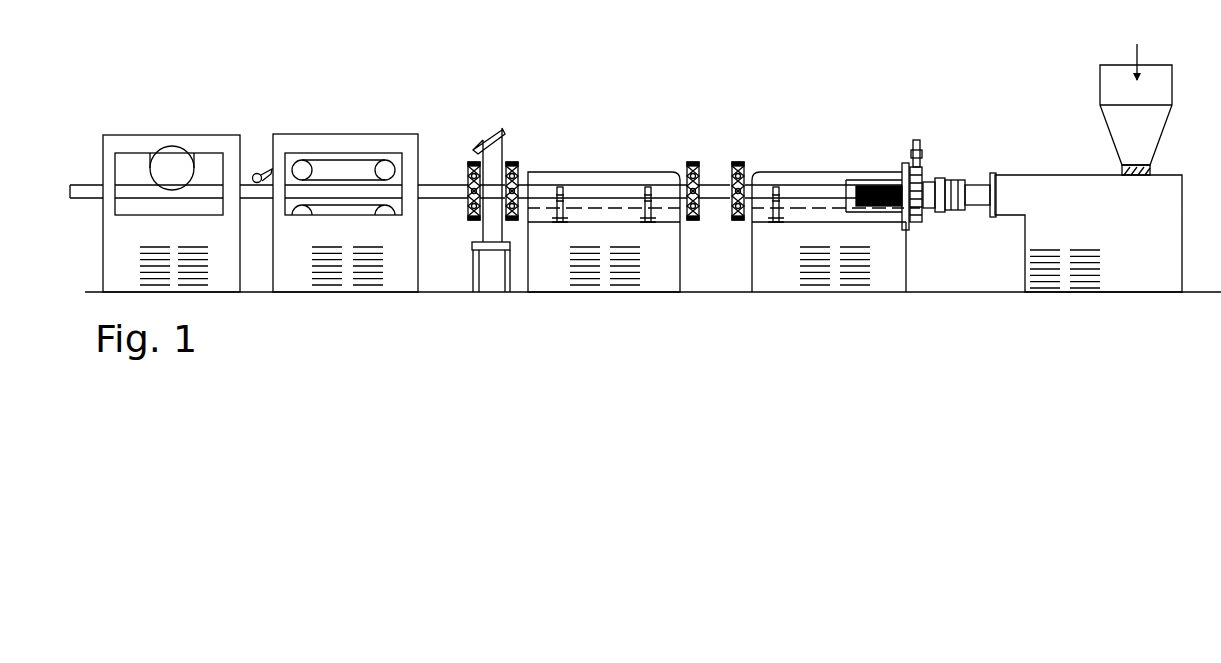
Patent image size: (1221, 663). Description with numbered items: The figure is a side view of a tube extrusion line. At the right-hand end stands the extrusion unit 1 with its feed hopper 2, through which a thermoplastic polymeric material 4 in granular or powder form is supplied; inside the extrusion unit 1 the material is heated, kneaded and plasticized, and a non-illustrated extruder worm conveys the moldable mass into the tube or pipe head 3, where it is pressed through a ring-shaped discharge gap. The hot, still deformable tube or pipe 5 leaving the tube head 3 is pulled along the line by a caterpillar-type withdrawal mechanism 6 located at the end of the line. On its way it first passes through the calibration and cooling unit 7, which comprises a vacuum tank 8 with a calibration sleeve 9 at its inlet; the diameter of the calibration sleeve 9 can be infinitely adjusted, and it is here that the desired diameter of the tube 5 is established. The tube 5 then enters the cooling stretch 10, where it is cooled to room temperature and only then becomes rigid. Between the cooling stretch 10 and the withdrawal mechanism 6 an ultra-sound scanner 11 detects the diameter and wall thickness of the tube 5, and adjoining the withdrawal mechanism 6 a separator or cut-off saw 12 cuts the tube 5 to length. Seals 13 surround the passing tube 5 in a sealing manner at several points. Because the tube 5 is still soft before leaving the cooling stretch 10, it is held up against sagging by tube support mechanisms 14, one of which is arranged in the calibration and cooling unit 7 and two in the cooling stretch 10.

The extrusion unit 1 is at (1050, 108).
The feed hopper 2 is at (1147, 132).
The tube or pipe head 3 is at (967, 209).
The thermoplastic polymeric material 4 is at (1140, 55).
The tube or pipe 5 is at (484, 238).
The caterpillar-type withdrawal mechanism 6 is at (350, 106).
The calibration and cooling unit 7 is at (837, 187).
The vacuum tank 8 is at (805, 180).
The calibration sleeve 9 is at (880, 186).
The cooling stretch 10 is at (603, 112).
The ultra-sound scanner 11 is at (490, 102).
The separator or cut-off saw 12 is at (186, 114).
The seals 13 is at (472, 162).
The tube support mechanism 14 is at (560, 187).